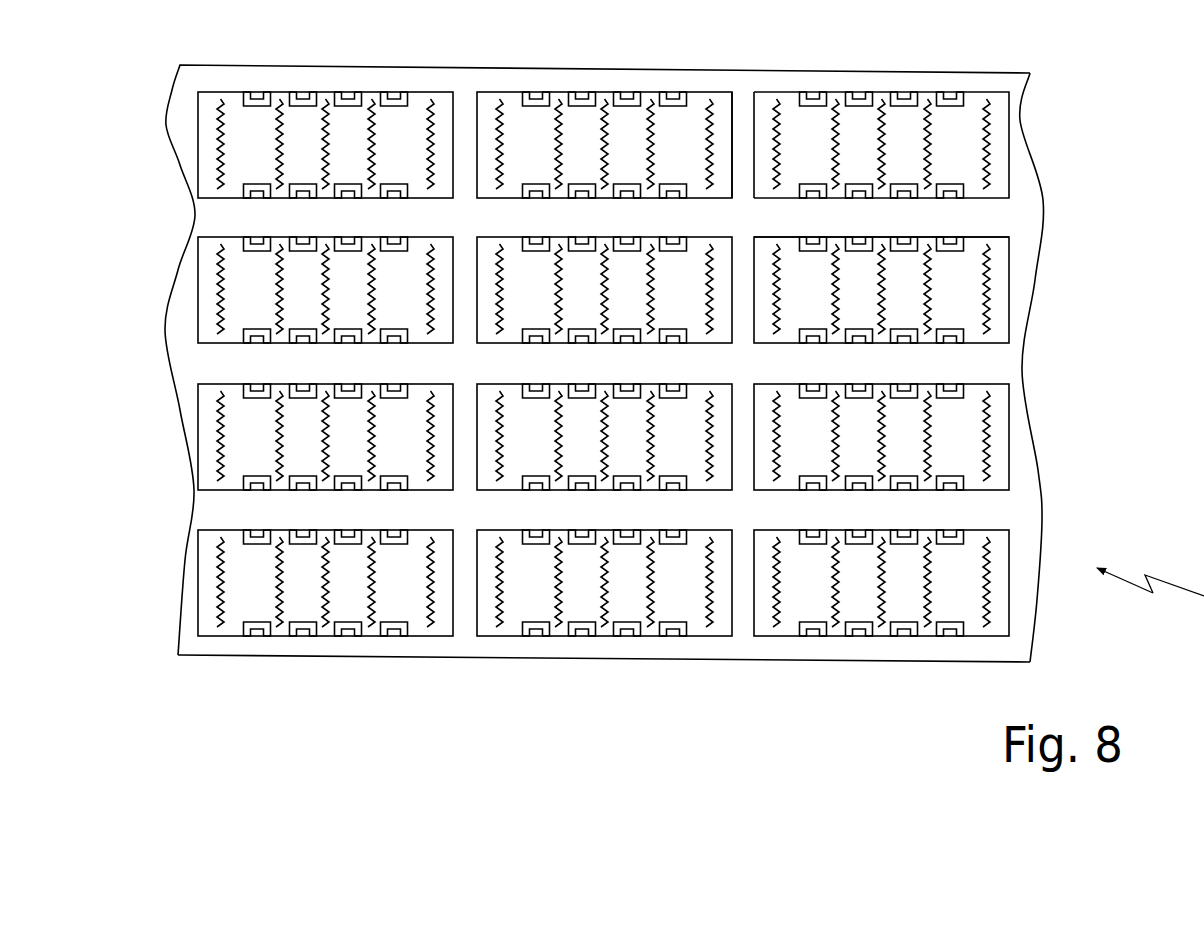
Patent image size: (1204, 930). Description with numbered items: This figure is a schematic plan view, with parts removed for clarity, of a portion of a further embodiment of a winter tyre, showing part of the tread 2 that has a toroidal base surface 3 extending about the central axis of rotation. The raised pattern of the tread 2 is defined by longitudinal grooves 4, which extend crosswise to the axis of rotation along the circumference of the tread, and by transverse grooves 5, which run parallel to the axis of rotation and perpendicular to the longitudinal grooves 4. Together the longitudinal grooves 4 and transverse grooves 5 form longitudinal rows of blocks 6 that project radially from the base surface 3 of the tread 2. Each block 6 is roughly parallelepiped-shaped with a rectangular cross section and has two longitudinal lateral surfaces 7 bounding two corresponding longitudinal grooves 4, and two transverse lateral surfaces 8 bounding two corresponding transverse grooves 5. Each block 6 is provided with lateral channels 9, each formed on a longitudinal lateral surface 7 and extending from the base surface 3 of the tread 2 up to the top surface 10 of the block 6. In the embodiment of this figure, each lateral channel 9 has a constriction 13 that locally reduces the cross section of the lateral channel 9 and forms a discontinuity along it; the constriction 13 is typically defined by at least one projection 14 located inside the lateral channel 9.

The tread 2 is at (679, 319).
The base surface 3 is at (645, 363).
The longitudinal grooves 4 is at (990, 222).
The transverse grooves 5 is at (744, 127).
The block 6 is at (1040, 152).
The longitudinal lateral surface 7 is at (1001, 92).
The transverse lateral surface 8 is at (1015, 196).
The lateral channel 9 is at (862, 102).
The top surface 10 is at (905, 127).
The constriction 13 is at (821, 81).
The projection 14 is at (807, 99).